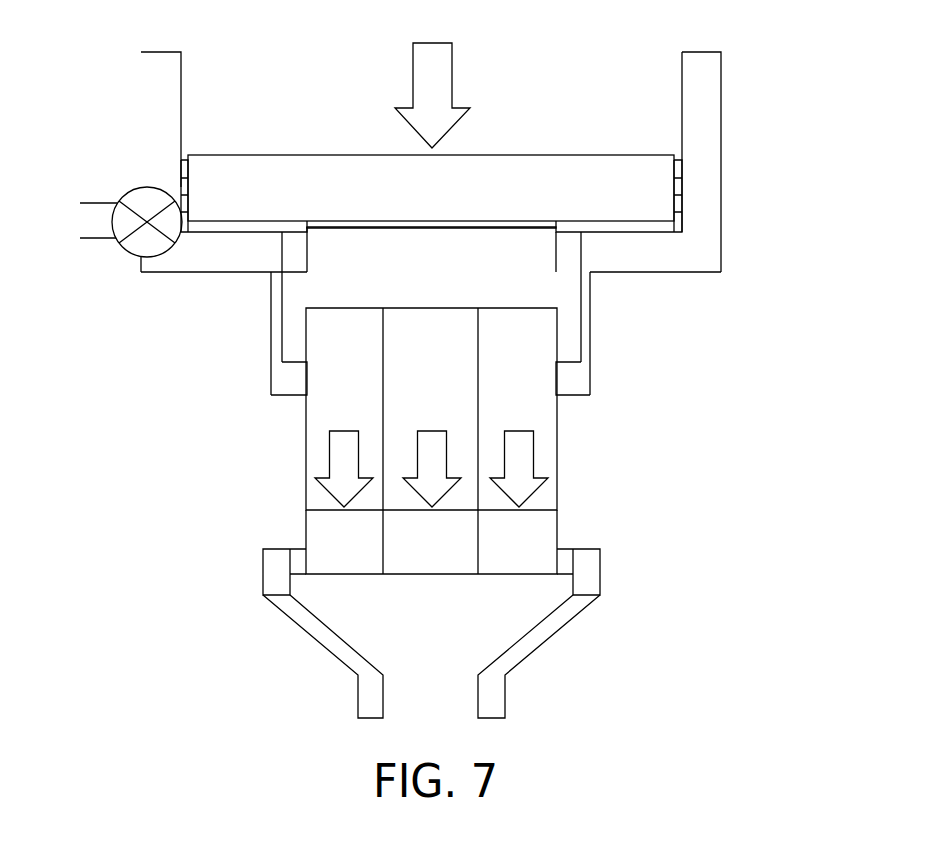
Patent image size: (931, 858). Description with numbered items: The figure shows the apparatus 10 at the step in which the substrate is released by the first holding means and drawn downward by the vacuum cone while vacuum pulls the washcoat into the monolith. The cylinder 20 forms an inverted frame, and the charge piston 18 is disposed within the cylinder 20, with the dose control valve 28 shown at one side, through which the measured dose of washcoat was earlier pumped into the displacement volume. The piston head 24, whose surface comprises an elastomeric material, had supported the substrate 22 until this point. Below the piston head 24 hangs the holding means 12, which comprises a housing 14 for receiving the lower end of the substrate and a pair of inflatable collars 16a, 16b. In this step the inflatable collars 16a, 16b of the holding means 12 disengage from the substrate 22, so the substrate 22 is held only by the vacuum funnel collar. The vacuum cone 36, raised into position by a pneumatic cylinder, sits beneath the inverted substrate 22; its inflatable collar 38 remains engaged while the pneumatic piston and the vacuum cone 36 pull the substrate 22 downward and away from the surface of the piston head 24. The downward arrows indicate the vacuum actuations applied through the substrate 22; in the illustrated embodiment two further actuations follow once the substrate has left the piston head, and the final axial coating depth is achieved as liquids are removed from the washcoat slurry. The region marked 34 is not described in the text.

The apparatus 10 is at (477, 157).
The holding means 12 is at (268, 336).
The housing 14 is at (591, 338).
The inflatable collar 16a is at (293, 390).
The inflatable collar 16b is at (292, 265).
The charge piston 18 is at (283, 167).
The cylinder 20 is at (713, 182).
The substrate 22 is at (447, 559).
The piston head 24 is at (508, 223).
The dose control valve 28 is at (130, 257).
The upper layer stack 34 is at (447, 367).
The vacuum cone 36 is at (542, 645).
The inflatable collar 38 is at (300, 554).